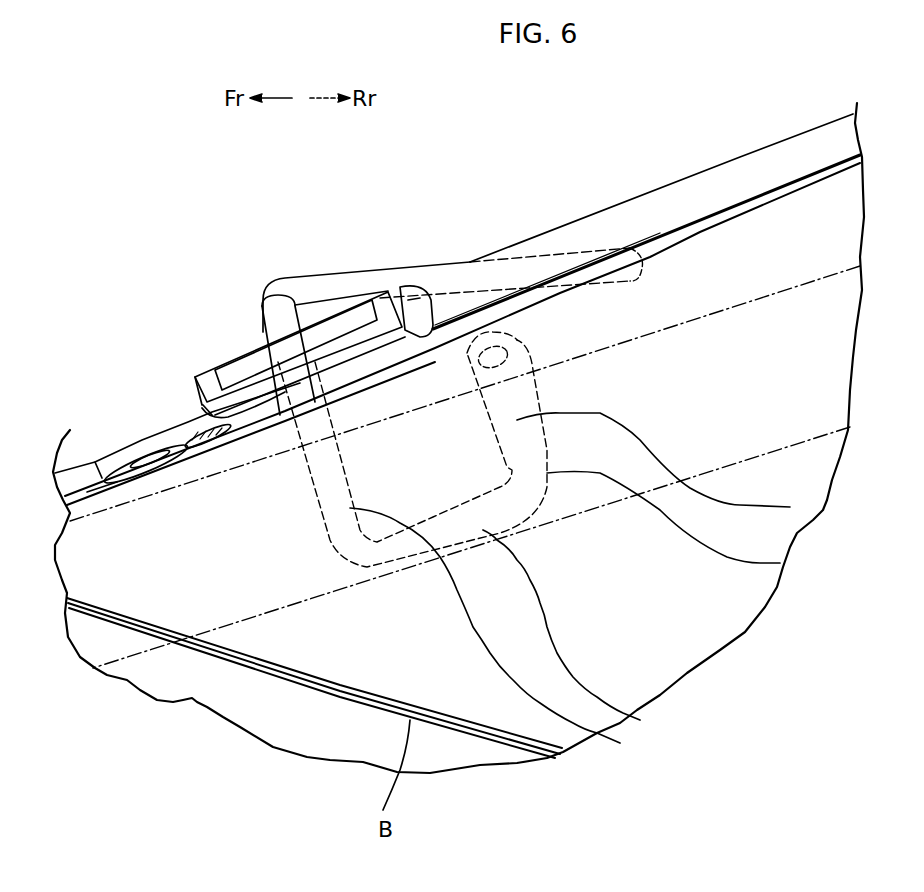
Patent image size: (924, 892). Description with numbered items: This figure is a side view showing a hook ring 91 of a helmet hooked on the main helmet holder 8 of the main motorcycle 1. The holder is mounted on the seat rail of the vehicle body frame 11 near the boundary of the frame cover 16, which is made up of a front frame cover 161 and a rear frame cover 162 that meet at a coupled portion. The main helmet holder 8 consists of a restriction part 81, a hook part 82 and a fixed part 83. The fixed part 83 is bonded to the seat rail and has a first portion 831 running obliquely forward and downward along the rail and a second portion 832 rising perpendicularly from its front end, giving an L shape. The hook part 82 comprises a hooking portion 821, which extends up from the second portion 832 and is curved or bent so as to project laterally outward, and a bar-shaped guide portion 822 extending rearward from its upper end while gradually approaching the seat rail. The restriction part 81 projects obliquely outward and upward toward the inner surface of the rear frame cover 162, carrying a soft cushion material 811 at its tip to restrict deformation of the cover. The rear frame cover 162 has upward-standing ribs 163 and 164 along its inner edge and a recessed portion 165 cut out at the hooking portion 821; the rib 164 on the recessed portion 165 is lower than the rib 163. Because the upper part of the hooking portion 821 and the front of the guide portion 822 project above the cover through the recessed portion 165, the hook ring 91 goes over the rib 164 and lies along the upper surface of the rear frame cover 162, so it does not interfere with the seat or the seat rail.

The main motorcycle 1 is at (906, 782).
The main helmet holder 8 is at (285, 210).
The vehicle body frame 11 is at (818, 374).
The frame cover 16 is at (251, 433).
The restriction part 81 is at (586, 413).
The hook part 82 is at (450, 193).
The fixed part 83 is at (740, 719).
The hook ring 91 is at (195, 375).
The front frame cover 161 is at (262, 713).
The rear frame cover 162 is at (462, 422).
The rib 163 is at (643, 200).
The rib 164 is at (170, 408).
The recessed portion 165 is at (188, 422).
The cushion material 811 is at (790, 507).
The hooking portion 821 is at (284, 322).
The guide portion 822 is at (412, 272).
The first portion 831 is at (640, 720).
The second portion 832 is at (620, 743).